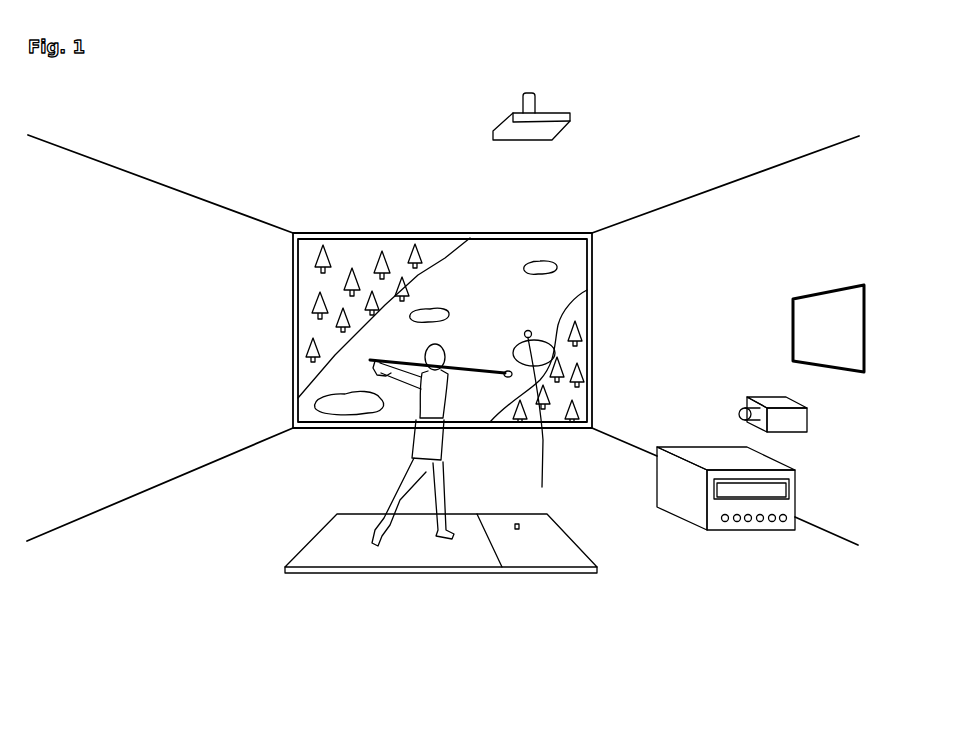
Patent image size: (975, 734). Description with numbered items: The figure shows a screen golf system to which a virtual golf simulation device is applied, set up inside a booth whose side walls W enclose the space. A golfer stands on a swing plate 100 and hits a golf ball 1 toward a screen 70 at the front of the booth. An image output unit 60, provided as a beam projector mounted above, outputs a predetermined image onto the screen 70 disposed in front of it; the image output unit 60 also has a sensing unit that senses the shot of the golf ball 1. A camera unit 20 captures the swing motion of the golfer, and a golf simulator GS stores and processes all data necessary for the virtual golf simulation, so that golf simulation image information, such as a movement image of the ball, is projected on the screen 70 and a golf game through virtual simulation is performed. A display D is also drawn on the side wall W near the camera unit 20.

The golf ball 1 is at (526, 331).
The camera unit 20 is at (773, 402).
The image output unit 60 is at (568, 119).
The screen 70 is at (492, 252).
The swing plate 100 is at (343, 568).
The display D is at (824, 291).
The golf simulator GS is at (682, 505).
The side walls W is at (168, 331).